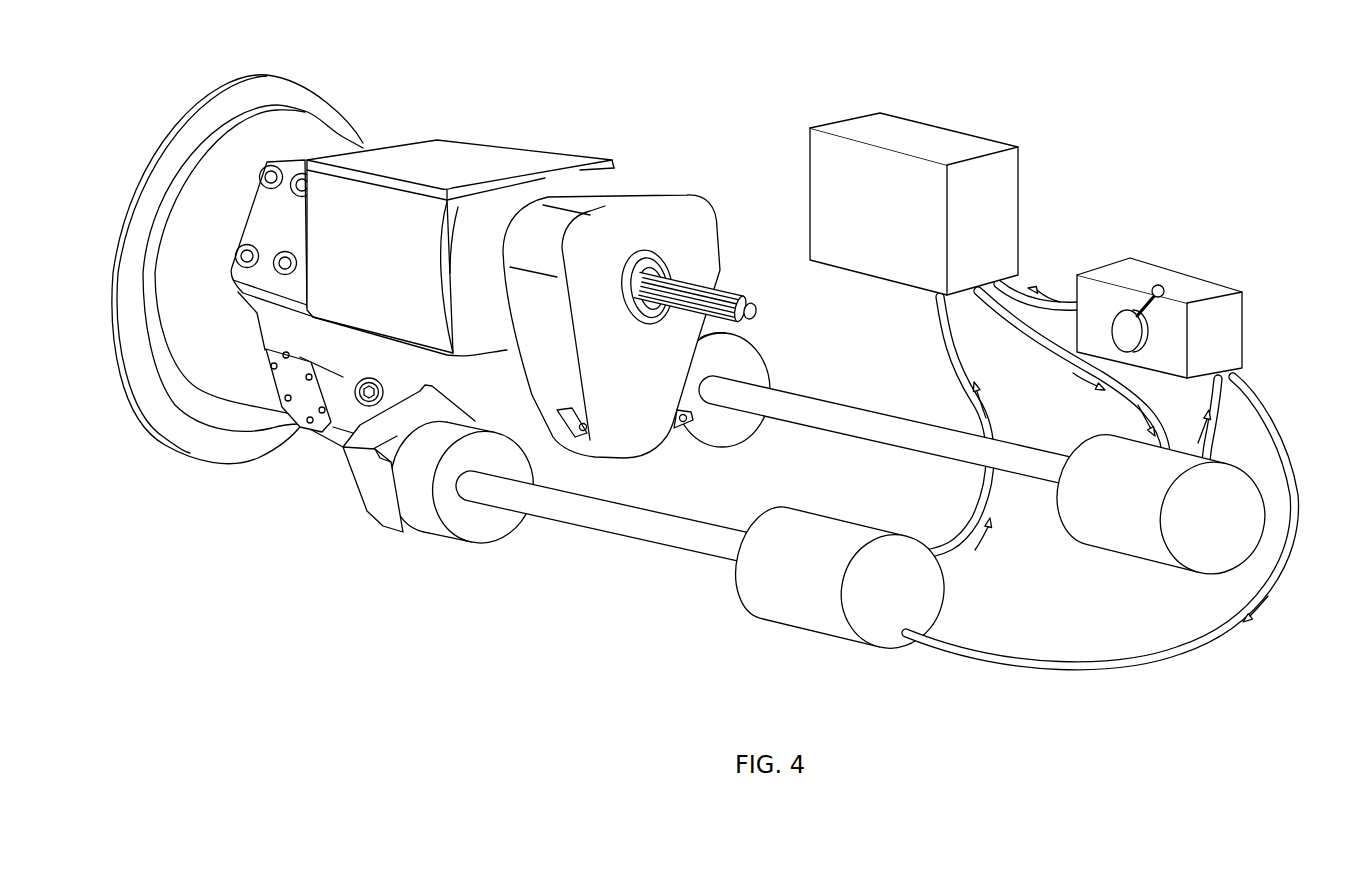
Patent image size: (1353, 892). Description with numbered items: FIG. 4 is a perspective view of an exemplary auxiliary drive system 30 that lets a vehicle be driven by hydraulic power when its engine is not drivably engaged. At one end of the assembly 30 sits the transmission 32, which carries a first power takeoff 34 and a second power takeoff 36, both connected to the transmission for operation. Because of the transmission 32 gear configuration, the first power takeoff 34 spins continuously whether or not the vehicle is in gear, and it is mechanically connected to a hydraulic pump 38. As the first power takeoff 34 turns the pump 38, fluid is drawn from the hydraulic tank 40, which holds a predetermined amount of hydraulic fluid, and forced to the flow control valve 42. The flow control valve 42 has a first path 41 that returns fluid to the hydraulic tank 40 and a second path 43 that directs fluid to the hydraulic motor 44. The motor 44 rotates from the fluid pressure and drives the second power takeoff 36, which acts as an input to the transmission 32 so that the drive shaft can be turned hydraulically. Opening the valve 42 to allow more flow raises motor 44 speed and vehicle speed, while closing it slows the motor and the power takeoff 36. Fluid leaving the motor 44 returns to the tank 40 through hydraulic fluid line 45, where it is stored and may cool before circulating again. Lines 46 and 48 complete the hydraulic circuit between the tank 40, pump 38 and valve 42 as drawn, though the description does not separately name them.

The auxiliary drive system 30 is at (712, 363).
The transmission 32 is at (581, 261).
The first power takeoff 34 is at (790, 347).
The second power takeoff 36 is at (434, 552).
The hydraulic pump 38 is at (1196, 553).
The hydraulic tank 40 is at (968, 143).
The first path 41 is at (1048, 303).
The flow control valve 42 is at (1228, 342).
The second path 43 is at (1283, 440).
The hydraulic motor 44 is at (793, 605).
The hydraulic fluid line 45 is at (963, 542).
The hydraulic line 46 is at (1059, 353).
The hydraulic line 48 is at (1213, 405).